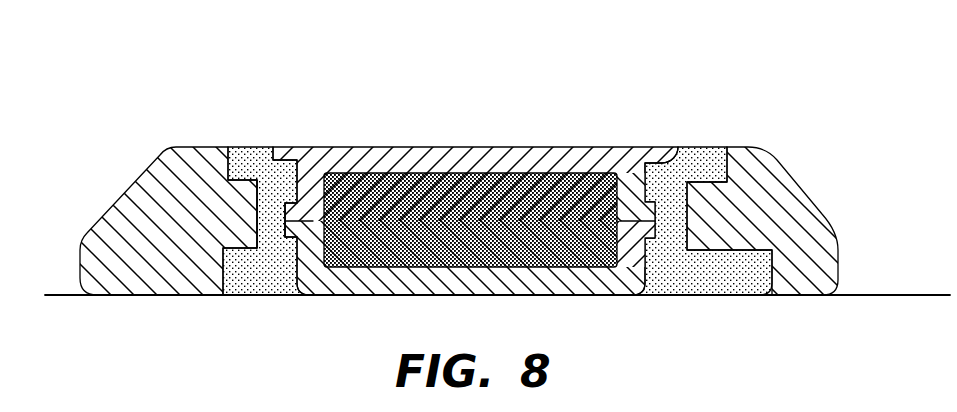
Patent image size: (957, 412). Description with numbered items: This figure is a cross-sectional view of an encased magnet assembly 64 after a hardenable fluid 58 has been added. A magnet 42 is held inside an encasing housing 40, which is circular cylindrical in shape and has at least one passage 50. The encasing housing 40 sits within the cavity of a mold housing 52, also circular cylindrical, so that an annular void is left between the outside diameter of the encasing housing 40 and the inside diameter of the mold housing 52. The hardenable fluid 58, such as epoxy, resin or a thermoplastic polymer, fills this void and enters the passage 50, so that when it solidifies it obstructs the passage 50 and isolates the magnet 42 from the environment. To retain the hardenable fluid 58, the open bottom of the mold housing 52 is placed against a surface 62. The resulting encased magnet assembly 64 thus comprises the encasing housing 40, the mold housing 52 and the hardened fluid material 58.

The encasing housing 40 is at (362, 160).
The magnet 42 is at (470, 208).
The passage 50 is at (286, 221).
The mold housing 52 is at (760, 192).
The hardenable fluid 58 is at (245, 160).
The surface 62 is at (63, 296).
The encased magnet assembly 64 is at (583, 79).